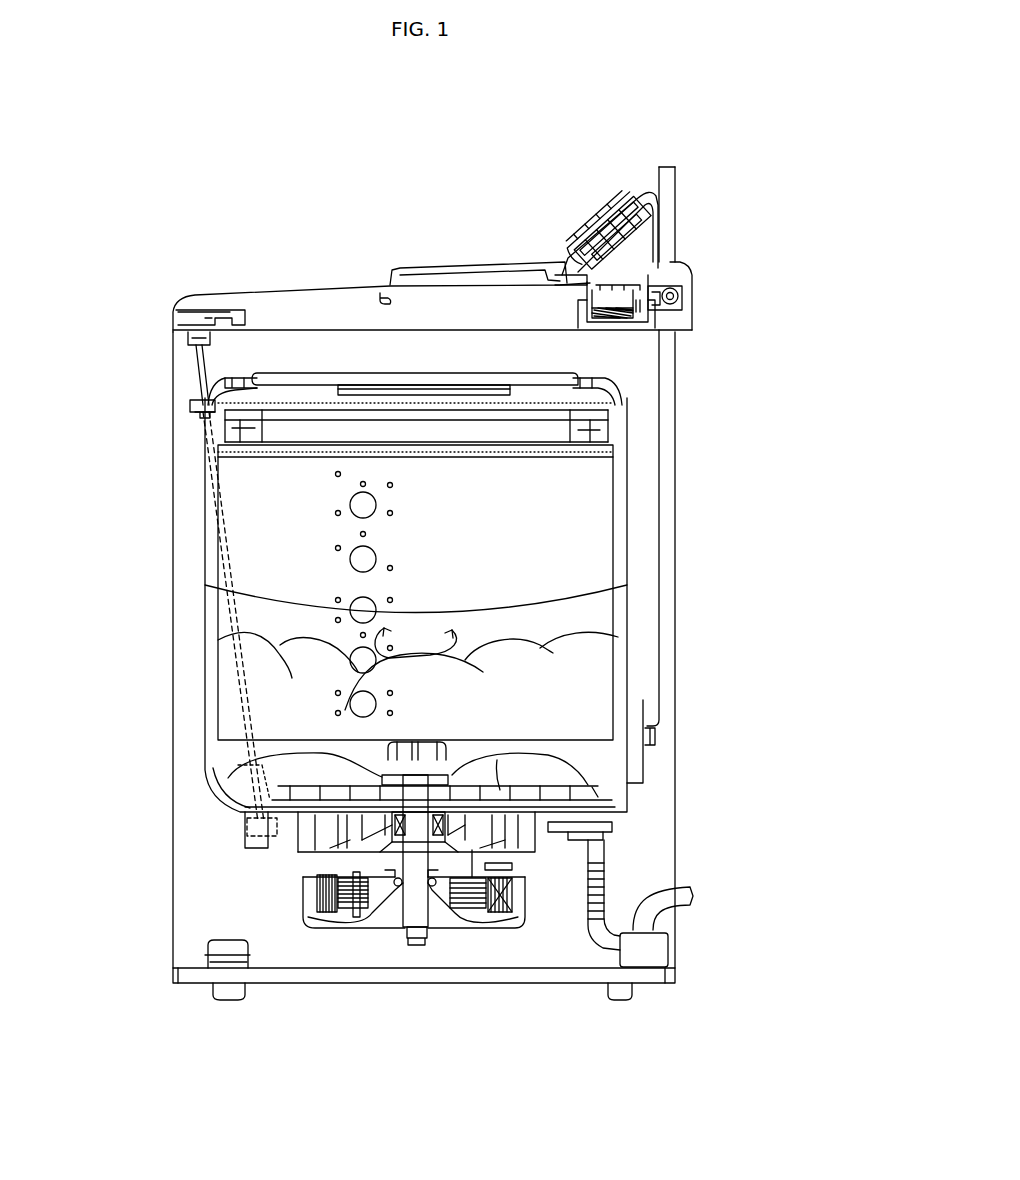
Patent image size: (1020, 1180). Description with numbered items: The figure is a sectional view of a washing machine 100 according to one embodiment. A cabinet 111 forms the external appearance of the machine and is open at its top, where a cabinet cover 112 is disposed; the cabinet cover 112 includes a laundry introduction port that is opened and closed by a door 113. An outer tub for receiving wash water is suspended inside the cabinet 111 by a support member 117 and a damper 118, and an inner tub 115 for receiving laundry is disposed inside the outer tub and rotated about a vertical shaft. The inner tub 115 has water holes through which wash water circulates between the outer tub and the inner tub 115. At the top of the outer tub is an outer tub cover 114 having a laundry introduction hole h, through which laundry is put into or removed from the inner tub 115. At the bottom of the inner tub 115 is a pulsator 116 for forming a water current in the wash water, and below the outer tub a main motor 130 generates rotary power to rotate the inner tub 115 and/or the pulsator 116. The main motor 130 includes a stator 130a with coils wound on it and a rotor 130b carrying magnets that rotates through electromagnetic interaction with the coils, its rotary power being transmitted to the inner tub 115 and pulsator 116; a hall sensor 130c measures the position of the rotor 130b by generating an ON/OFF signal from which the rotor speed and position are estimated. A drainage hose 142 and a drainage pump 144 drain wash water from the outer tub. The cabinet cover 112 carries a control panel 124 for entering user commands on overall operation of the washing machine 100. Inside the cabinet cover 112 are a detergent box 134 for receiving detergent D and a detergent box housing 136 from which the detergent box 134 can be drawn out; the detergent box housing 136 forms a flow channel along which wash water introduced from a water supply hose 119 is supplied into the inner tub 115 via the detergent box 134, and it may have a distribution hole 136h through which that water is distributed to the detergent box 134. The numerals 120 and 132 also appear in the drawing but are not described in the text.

The washing machine 100 is at (118, 115).
The cabinet 111 is at (172, 468).
The cabinet cover 112 is at (218, 300).
The door 113 is at (435, 268).
The outer tub cover 114 is at (622, 384).
The inner tub 115 is at (615, 538).
The pulsator 116 is at (505, 757).
The support member 117 is at (190, 352).
The damper 118 is at (240, 805).
The water supply hose 119 is at (668, 186).
The suspension rod hanger 120 is at (205, 400).
The control panel 124 is at (600, 222).
The main motor 130 is at (374, 940).
The stator 130a is at (515, 905).
The rotor 130b is at (480, 905).
The hall sensor 130c is at (327, 923).
The pulsator and shaft 132 is at (412, 853).
The detergent box 134 is at (583, 308).
The detergent box housing 136 is at (662, 288).
The distribution hole 136h is at (690, 300).
The drainage hose 142 is at (607, 952).
The drainage pump 144 is at (648, 945).
The laundry introduction hole h is at (362, 382).
The detergent D is at (650, 310).